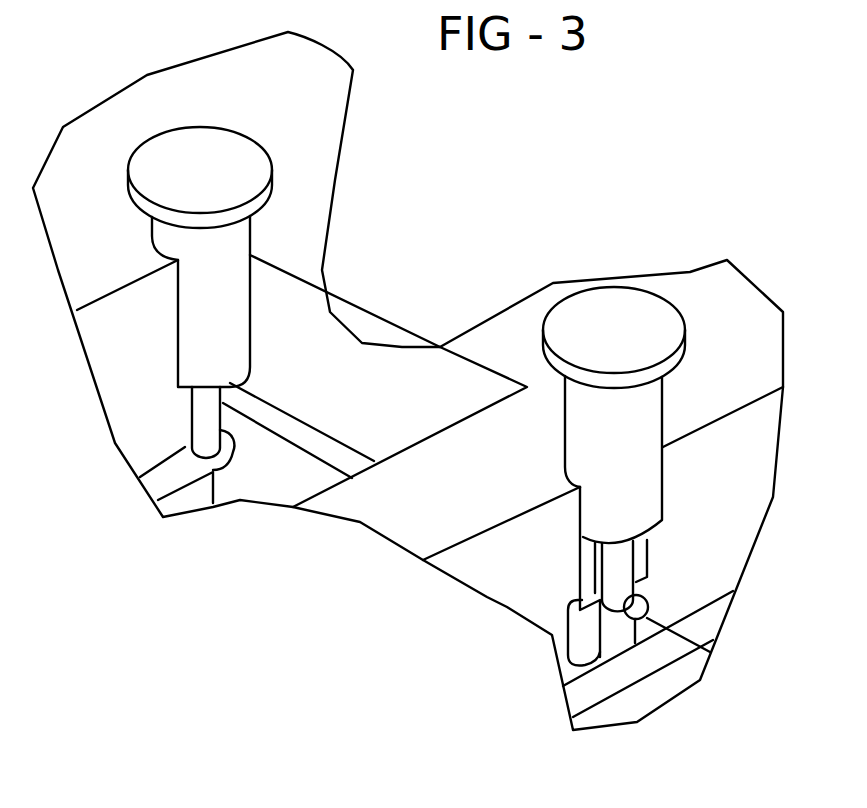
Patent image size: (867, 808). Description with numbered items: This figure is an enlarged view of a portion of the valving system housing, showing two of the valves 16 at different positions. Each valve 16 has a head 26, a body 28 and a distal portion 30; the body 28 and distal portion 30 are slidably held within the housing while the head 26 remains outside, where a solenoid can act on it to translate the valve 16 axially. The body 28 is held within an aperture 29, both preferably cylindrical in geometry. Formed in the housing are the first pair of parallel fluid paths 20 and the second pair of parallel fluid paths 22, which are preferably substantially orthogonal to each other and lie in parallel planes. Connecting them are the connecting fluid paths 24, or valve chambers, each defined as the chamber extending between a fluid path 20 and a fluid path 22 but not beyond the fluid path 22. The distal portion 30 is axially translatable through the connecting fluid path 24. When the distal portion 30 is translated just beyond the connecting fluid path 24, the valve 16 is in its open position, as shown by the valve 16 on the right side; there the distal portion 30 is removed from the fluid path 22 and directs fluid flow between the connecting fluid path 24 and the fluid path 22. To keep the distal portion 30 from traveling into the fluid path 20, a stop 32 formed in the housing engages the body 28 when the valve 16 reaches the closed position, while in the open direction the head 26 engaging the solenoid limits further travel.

The valve 16 is at (250, 335).
The first pair of parallel fluid paths 20 is at (233, 453).
The second pair of parallel fluid paths 22 is at (362, 450).
The connecting fluid path 24 is at (192, 418).
The head 26 is at (663, 328).
The body 28 is at (603, 525).
The aperture 29 is at (590, 558).
The distal portion 30 is at (203, 443).
The stop 32 is at (580, 633).